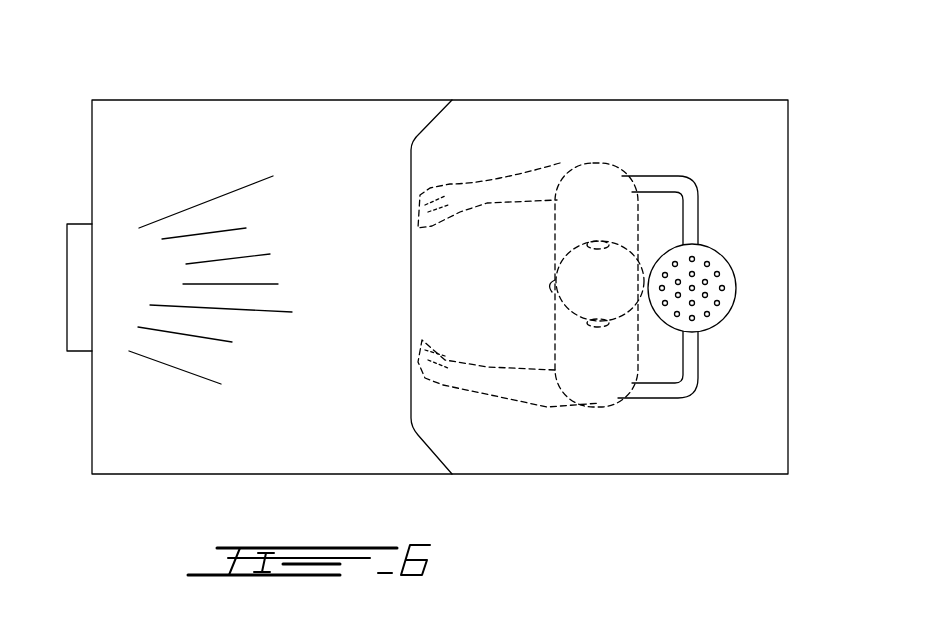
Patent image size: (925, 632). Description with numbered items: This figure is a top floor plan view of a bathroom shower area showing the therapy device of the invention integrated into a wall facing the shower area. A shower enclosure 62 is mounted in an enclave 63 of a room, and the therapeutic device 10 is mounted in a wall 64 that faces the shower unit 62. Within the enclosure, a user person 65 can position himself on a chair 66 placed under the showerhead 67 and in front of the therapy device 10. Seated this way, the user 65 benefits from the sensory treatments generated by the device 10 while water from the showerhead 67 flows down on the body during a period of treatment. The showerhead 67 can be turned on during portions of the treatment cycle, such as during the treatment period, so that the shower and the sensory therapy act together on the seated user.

The therapeutic device 10 is at (79, 328).
The shower enclosure 62 is at (740, 415).
The enclave 63 is at (628, 100).
The wall 64 is at (96, 172).
The user person 65 is at (595, 368).
The chair 66 is at (717, 350).
The showerhead 67 is at (717, 250).